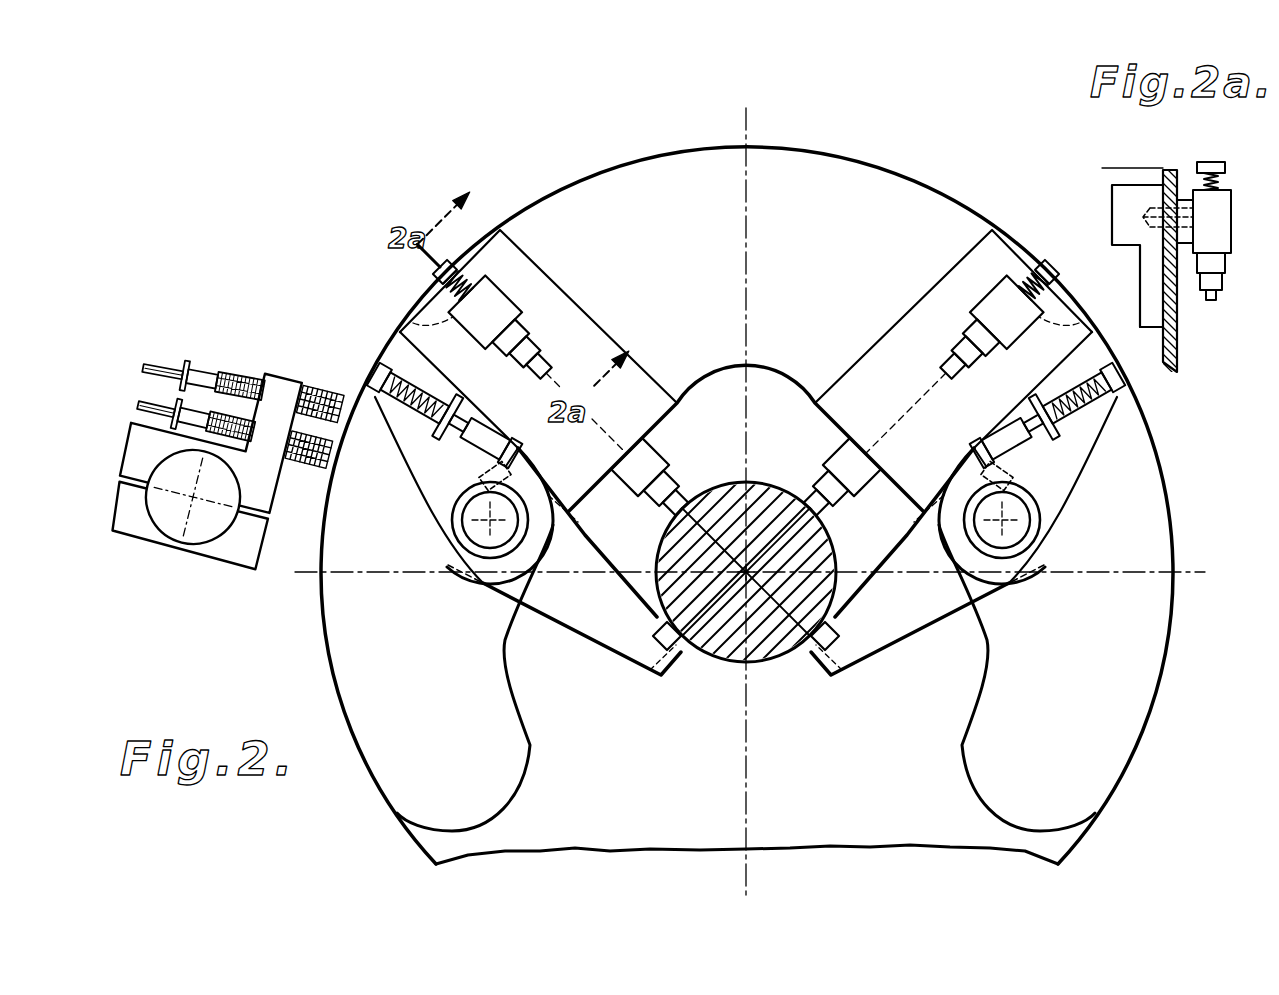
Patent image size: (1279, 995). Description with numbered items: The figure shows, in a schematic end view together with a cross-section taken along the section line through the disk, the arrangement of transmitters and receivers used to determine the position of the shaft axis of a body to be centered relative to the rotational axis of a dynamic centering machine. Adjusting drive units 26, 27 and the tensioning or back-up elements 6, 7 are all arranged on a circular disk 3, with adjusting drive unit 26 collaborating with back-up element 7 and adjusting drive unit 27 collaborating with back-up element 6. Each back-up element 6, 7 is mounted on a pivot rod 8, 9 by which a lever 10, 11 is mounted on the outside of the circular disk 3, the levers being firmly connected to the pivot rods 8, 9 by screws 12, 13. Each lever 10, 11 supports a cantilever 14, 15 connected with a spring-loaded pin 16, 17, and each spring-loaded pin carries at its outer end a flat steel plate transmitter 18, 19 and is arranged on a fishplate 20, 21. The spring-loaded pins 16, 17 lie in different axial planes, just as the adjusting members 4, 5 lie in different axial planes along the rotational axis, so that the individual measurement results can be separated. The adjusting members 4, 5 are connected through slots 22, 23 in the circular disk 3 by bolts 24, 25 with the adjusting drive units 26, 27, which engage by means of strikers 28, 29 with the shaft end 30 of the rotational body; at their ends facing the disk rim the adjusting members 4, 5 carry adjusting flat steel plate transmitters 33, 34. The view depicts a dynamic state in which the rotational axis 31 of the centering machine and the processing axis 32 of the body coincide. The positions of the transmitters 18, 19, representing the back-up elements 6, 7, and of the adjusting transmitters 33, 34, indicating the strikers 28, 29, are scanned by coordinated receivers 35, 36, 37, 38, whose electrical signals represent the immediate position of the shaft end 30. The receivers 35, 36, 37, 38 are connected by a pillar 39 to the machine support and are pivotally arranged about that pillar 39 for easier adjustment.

In FIG. 2, the circular disk 3 is at (610, 207).
In FIG. 2A, the circular disk 3 is at (1180, 305).
In FIG. 2, the adjusting member 4 is at (538, 307).
In FIG. 2, the adjusting member 5 is at (953, 308).
In FIG. 2, the back-up element 6 is at (823, 660).
In FIG. 2, the back-up element 7 is at (668, 658).
In FIG. 2, the pivot rod 8 is at (1026, 527).
In FIG. 2, the pivot rod 9 is at (470, 541).
In FIG. 2, the lever 10 is at (1038, 515).
In FIG. 2, the lever 11 is at (470, 521).
In FIG. 2, the screw 12 is at (1007, 470).
In FIG. 2, the screw 13 is at (481, 478).
In FIG. 2, the cantilever 14 is at (971, 452).
In FIG. 2, the cantilever 15 is at (522, 452).
In FIG. 2, the spring-loaded pin 16 is at (1048, 438).
In FIG. 2, the spring-loaded pin 17 is at (465, 436).
In FIG. 2, the flat steel plate transmitter 18 is at (1128, 388).
In FIG. 2, the flat steel plate transmitter 19 is at (383, 372).
In FIG. 2, the fishplate 20 is at (1097, 432).
In FIG. 2, the fishplate 21 is at (408, 452).
In FIG. 2, the slot 22 is at (1022, 322).
In FIG. 2A, the slot 22 is at (1212, 215).
In FIG. 2, the slot 23 is at (452, 318).
In FIG. 2A, the slot 23 is at (1195, 195).
In FIG. 2A, the bolt 24 is at (1129, 178).
In FIG. 2A, the bolt 25 is at (1150, 215).
In FIG. 2, the adjusting drive unit 26 is at (962, 275).
In FIG. 2A, the adjusting drive unit 26 is at (1193, 285).
In FIG. 2, the adjusting drive unit 27 is at (512, 278).
In FIG. 2A, the adjusting drive unit 27 is at (1177, 357).
In FIG. 2, the striker 28 is at (830, 512).
In FIG. 2A, the striker 28 is at (1108, 295).
In FIG. 2, the striker 29 is at (660, 506).
In FIG. 2A, the striker 29 is at (1150, 283).
In FIG. 2, the shaft end 30 is at (712, 655).
In FIG. 2, the rotational axis 31 is at (788, 635).
In FIG. 2, the processing axis 32 is at (748, 576).
In FIG. 2, the adjusting flat steel plate transmitter 33 is at (466, 278).
In FIG. 2, the adjusting flat steel plate transmitter 34 is at (1012, 290).
In FIG. 2, the receiver 35 is at (224, 383).
In FIG. 2, the receiver 36 is at (240, 388).
In FIG. 2, the receiver 37 is at (198, 362).
In FIG. 2, the receiver 38 is at (195, 383).
In FIG. 2, the pillar 39 is at (178, 522).